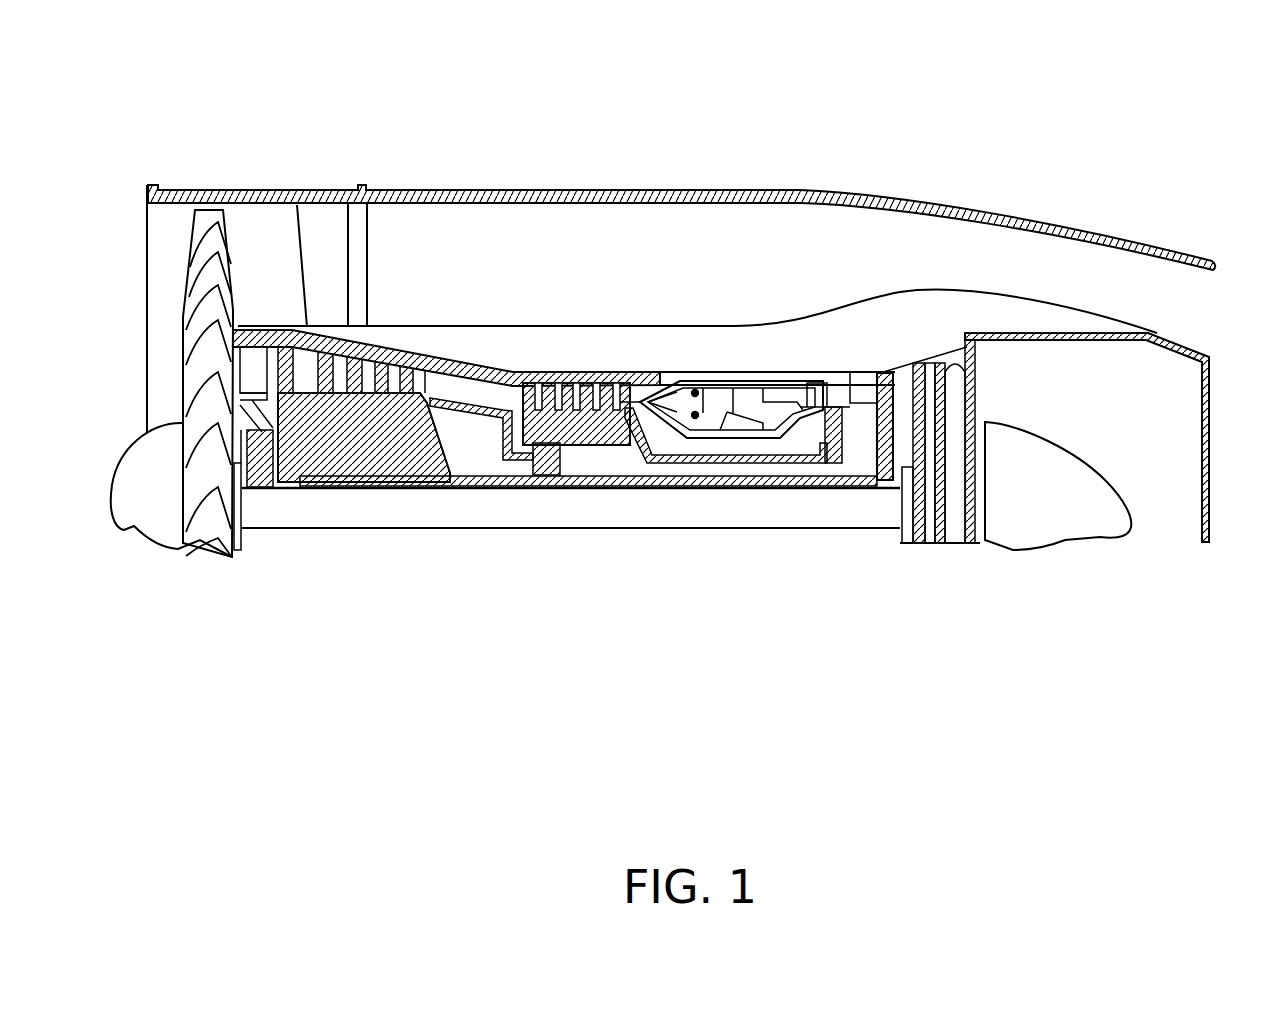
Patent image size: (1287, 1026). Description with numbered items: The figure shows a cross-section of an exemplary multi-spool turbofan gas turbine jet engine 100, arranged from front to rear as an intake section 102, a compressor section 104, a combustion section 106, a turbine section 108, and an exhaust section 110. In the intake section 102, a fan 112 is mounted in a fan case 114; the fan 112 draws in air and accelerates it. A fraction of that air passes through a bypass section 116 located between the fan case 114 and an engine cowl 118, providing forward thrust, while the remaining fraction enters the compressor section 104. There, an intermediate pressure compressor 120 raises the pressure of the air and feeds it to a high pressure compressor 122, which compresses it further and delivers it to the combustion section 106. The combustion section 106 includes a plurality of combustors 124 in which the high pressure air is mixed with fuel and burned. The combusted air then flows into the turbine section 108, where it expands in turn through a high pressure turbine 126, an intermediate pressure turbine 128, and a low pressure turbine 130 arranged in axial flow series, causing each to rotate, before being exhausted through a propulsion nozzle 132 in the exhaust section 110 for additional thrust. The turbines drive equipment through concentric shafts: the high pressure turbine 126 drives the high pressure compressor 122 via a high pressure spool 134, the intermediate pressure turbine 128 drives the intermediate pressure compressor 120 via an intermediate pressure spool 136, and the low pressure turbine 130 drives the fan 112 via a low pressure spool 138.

The multi-spool turbofan gas turbine jet engine 100 is at (413, 140).
The intake section 102 is at (250, 633).
The compressor section 104 is at (572, 633).
The combustion section 106 is at (777, 633).
The turbine section 108 is at (975, 633).
The exhaust section 110 is at (1148, 633).
The fan 112 is at (192, 322).
The fan case 114 is at (268, 192).
The bypass section 116 is at (583, 215).
The engine cowl 118 is at (672, 326).
The intermediate pressure compressor 120 is at (363, 453).
The high pressure compressor 122 is at (587, 453).
The combustors 124 is at (797, 380).
The high pressure turbine 126 is at (830, 385).
The intermediate pressure turbine 128 is at (903, 367).
The low pressure turbine 130 is at (968, 360).
The propulsion nozzle 132 is at (1204, 447).
The high pressure spool 134 is at (683, 462).
The intermediate pressure spool 136 is at (780, 474).
The low pressure spool 138 is at (864, 512).